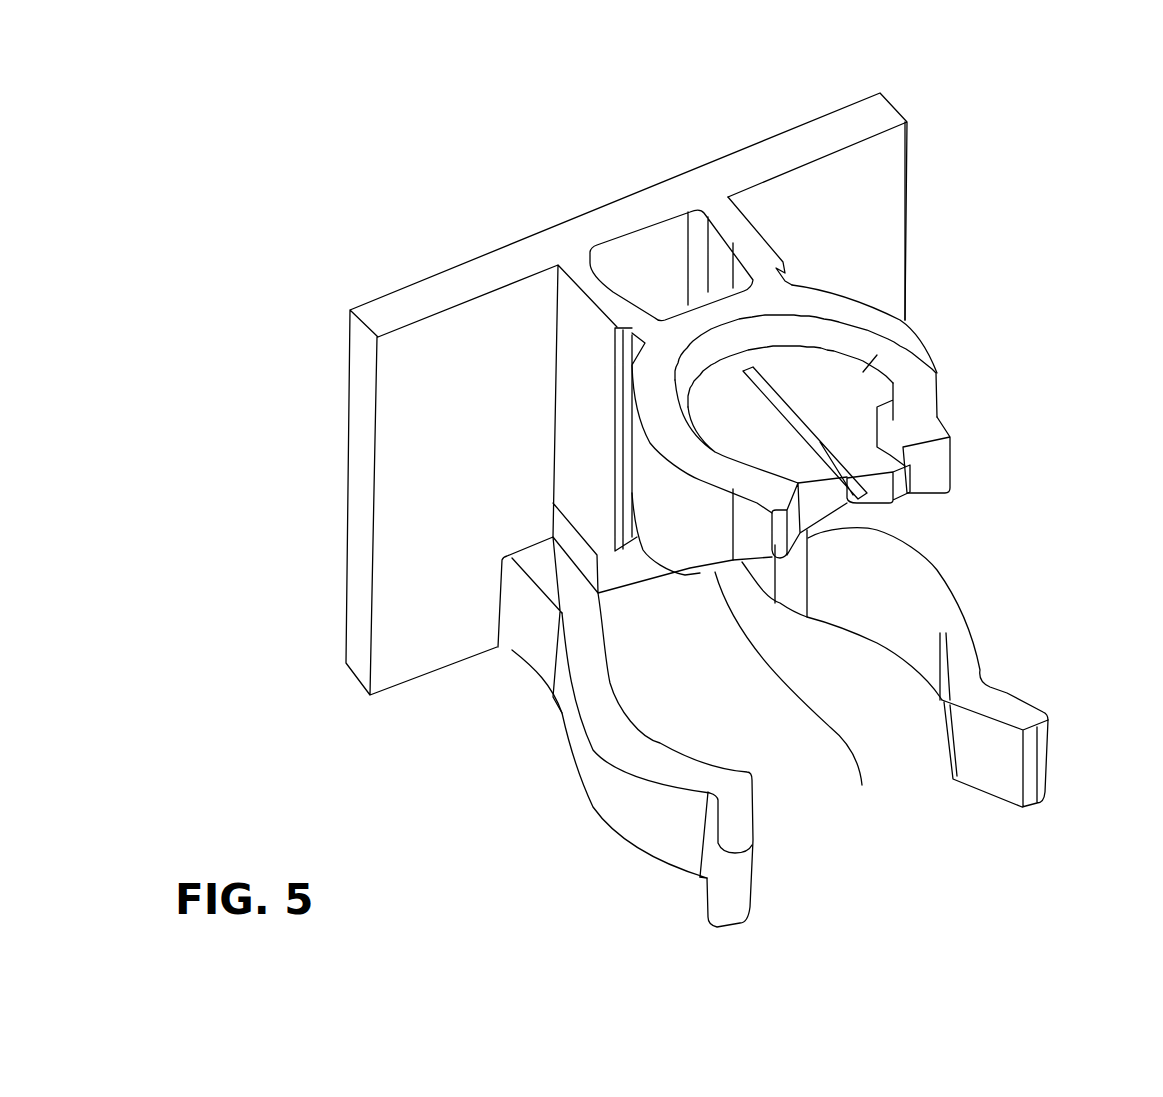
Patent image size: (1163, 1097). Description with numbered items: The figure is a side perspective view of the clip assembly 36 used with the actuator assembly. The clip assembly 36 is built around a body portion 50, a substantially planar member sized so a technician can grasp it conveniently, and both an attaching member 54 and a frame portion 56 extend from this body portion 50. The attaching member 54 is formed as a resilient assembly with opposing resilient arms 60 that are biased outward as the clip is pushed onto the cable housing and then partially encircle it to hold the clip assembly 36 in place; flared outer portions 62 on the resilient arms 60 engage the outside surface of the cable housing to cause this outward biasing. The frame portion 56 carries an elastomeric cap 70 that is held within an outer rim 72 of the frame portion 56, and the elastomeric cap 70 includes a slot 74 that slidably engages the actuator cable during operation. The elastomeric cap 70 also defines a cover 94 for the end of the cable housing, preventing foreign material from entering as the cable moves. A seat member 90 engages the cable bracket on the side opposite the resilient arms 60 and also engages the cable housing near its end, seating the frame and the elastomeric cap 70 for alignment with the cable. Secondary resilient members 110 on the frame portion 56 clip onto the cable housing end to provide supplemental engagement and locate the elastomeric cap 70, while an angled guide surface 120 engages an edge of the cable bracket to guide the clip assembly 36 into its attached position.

The clip assembly 36 is at (1008, 290).
The body portion 50 is at (455, 278).
The attaching member 54 is at (575, 802).
The frame portion 56 is at (948, 400).
The resilient arms 60 is at (940, 603).
The flared outer portions 62 is at (997, 753).
The elastomeric cap 70 is at (836, 415).
The outer rim 72 is at (873, 322).
The slot 74 is at (777, 403).
The seat member 90 is at (590, 357).
The cover 94 is at (767, 342).
The secondary resilient members 110 is at (745, 518).
The angled guide surface 120 is at (875, 821).